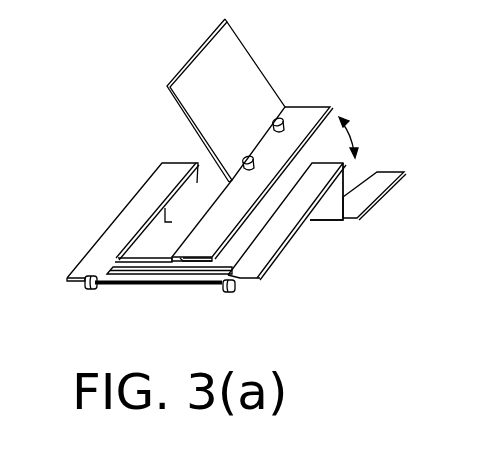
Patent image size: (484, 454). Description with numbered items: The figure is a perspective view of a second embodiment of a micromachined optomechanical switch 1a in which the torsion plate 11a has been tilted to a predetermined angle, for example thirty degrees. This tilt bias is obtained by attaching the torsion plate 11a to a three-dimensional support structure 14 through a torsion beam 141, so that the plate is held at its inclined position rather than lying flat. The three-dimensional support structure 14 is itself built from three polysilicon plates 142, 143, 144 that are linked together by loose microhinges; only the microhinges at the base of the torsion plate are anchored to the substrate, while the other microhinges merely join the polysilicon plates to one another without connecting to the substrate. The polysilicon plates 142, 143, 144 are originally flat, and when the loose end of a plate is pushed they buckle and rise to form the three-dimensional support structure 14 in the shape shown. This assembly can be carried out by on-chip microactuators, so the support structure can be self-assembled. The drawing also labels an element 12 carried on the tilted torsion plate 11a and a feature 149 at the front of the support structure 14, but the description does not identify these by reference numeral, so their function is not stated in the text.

The optomechanical switch 1a is at (152, 95).
The torsion plate 11a is at (306, 107).
The disk cartridge / plate 12 is at (238, 70).
The three-dimensional support structure 14 is at (126, 206).
The torsion beam 141 is at (140, 265).
The polysilicon plate 142 is at (100, 243).
The polysilicon plate 143 is at (330, 206).
The polysilicon plate 144 is at (375, 188).
The pin 149 is at (87, 290).